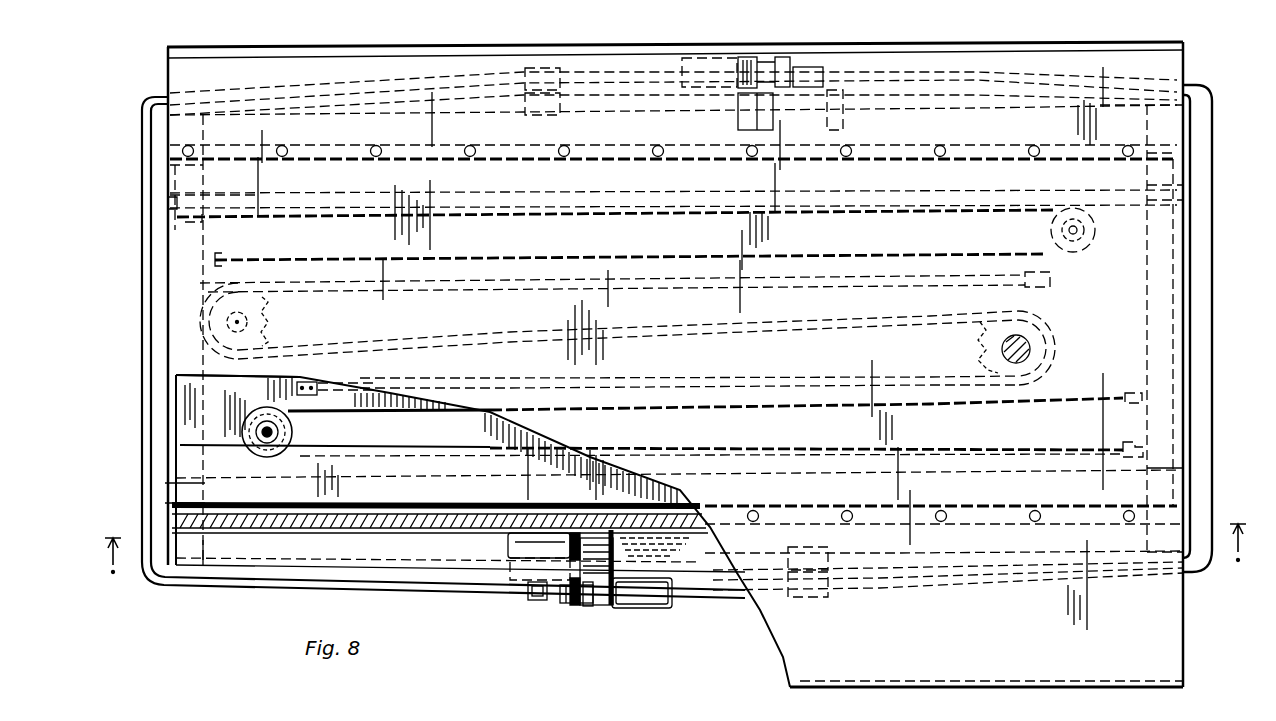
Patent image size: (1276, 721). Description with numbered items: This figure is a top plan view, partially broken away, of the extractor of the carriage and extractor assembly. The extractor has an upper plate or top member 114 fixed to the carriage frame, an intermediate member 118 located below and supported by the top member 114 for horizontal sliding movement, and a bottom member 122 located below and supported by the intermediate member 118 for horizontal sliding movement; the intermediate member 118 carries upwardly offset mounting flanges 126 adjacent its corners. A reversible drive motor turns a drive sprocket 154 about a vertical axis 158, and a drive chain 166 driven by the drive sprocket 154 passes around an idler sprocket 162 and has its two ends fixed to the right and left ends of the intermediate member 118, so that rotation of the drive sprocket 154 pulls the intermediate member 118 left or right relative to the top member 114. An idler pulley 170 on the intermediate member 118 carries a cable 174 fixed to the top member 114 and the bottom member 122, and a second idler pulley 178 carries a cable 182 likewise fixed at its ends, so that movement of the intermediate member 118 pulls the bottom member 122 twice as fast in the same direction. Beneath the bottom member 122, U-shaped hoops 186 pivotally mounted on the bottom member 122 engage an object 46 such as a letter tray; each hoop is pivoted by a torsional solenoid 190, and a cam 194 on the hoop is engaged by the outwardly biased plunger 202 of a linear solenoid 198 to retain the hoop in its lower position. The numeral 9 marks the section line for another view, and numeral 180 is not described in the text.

The top member 114 is at (1163, 632).
The hoop 186 is at (1213, 401).
The cable 182 is at (622, 219).
The idler pulley 178 is at (1050, 234).
The idler sprocket 162 is at (272, 322).
The drive sprocket 154 is at (1032, 318).
The vertical axis 158 is at (1030, 349).
The drive chain 166 is at (706, 378).
The idler pulley 170 is at (284, 433).
The cable 174 is at (448, 410).
The cover plate edge 180 is at (168, 375).
The intermediate member 118 is at (175, 483).
The mounting flange 126 is at (176, 503).
The bottom member 122 is at (195, 553).
The object 46 is at (275, 555).
The section line 9- 9 is at (126, 615).
The linear solenoid 198 is at (682, 74).
The torsional solenoid 190 is at (845, 120).
The cam 194 is at (550, 583).
The plunger 202 is at (586, 606).